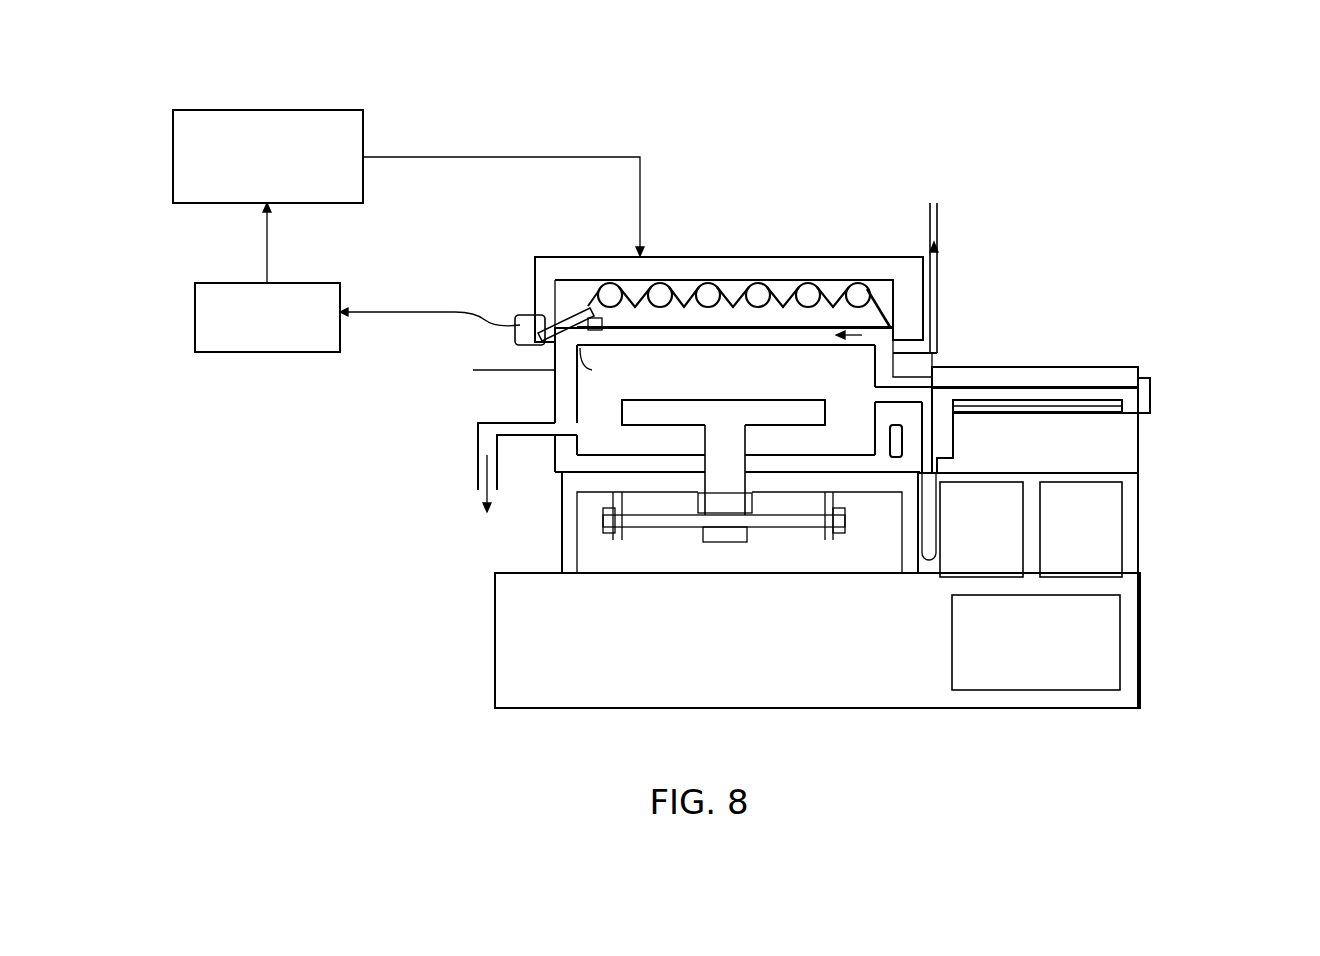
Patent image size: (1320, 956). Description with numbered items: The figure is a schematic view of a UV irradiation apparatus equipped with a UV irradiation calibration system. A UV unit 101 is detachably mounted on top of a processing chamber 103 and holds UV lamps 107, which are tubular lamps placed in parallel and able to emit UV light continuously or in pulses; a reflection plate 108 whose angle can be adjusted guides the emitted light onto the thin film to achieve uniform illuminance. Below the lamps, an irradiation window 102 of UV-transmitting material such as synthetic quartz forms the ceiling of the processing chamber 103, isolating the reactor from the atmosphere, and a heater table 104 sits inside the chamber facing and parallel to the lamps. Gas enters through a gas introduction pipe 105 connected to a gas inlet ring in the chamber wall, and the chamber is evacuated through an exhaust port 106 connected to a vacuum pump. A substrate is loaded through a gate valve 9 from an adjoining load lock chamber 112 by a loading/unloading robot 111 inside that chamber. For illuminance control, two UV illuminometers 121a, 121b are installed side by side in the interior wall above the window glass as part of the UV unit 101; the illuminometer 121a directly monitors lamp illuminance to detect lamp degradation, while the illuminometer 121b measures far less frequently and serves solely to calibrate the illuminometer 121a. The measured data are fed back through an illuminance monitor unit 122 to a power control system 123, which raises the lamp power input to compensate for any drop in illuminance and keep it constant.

The gate valve 9 is at (925, 405).
The UV unit 101 is at (840, 258).
The irradiation window 102 is at (918, 320).
The processing chamber 103 is at (557, 392).
The heater table 104 is at (802, 425).
The gas introduction pipe 105 is at (940, 287).
The exhaust port 106 is at (478, 457).
The UV lamp 107 is at (533, 283).
The reflection plate 108 is at (768, 283).
The loading/unloading robot 111 is at (1080, 410).
The load lock chamber 112 is at (1150, 448).
The UV illuminometer 121a is at (515, 345).
The UV illuminometer 121b is at (473, 370).
The illuminance monitor unit 122 is at (387, 243).
The power control system 123 is at (268, 156).